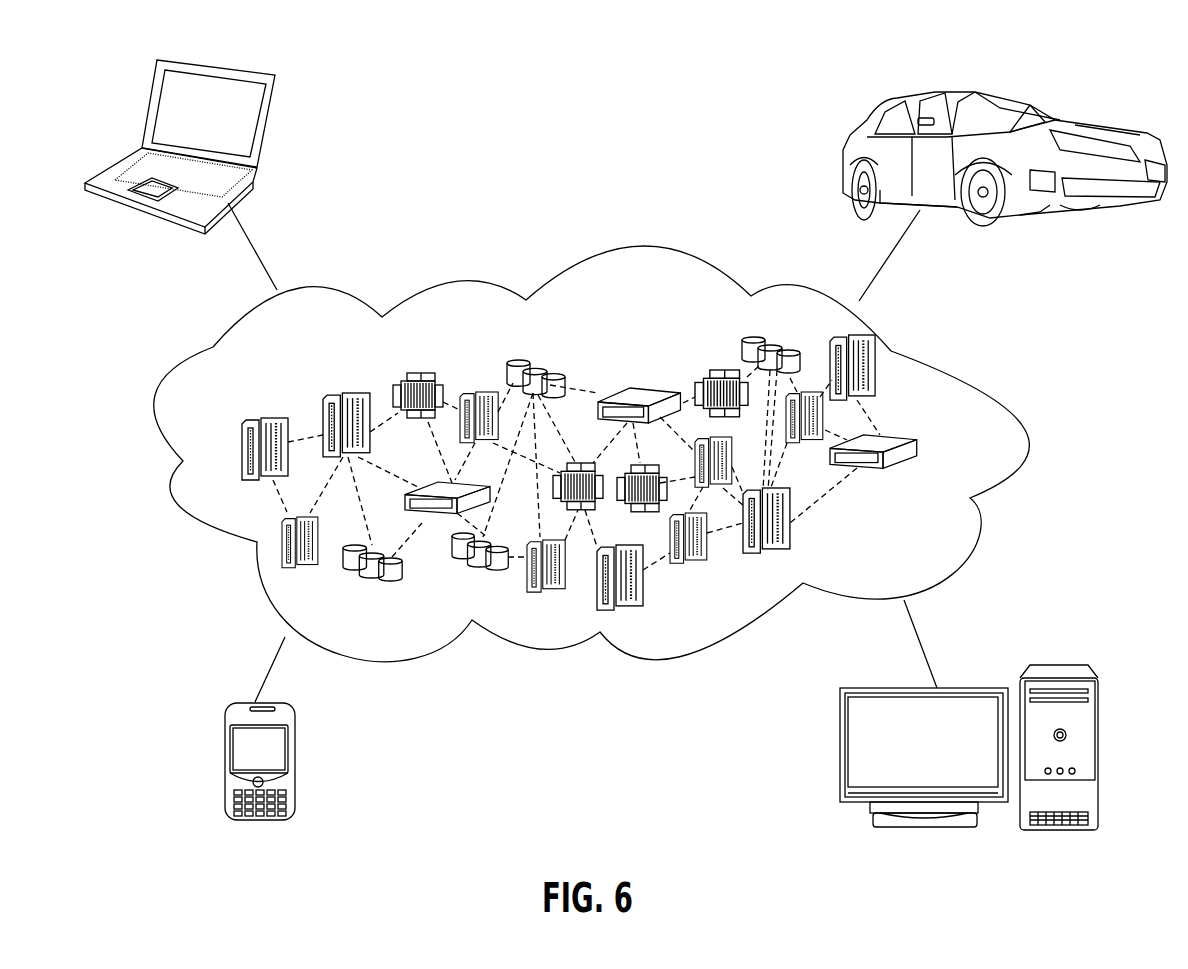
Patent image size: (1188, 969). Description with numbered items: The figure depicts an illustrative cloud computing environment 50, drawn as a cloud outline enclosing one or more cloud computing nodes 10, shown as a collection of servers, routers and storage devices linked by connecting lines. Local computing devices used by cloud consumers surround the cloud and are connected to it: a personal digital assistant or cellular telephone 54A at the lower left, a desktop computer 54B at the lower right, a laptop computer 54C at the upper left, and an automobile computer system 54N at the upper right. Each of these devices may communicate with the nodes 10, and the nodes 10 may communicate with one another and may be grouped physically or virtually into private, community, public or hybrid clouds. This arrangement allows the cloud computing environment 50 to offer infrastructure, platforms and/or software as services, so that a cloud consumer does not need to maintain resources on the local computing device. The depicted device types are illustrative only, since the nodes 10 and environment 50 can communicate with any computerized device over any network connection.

The cloud computing node 10 is at (955, 450).
The cloud computing environment 50 is at (982, 362).
The personal digital assistant or cellular telephone 54A is at (225, 767).
The desktop computer 54B is at (1063, 663).
The laptop computer 54C is at (265, 130).
The automobile computer system 54N is at (852, 138).